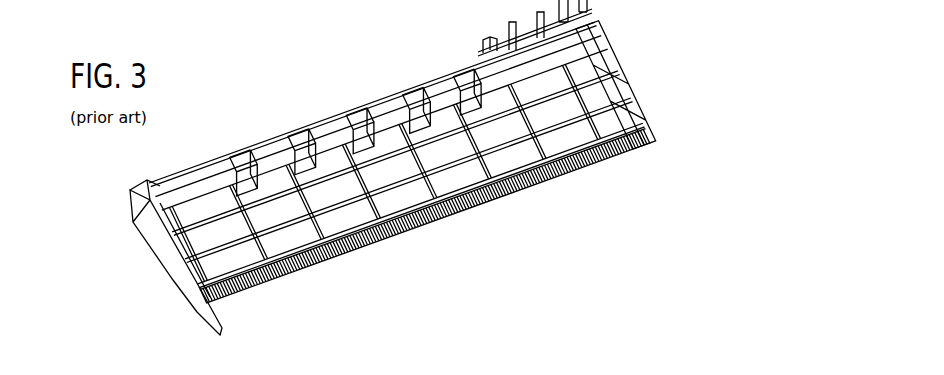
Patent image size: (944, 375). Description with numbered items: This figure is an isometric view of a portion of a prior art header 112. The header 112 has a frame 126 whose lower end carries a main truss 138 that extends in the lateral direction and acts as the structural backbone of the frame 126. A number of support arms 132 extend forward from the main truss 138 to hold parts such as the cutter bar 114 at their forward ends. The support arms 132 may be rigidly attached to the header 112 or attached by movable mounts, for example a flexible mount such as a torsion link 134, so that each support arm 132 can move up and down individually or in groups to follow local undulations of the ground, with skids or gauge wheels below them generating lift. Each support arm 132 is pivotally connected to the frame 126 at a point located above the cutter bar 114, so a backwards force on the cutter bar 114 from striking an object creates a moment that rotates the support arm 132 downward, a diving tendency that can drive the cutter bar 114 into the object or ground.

The header 112 is at (236, 73).
The cutter bar 114 is at (388, 240).
The header frame 126 is at (447, 80).
The support arm 132 is at (528, 150).
The torsion link 134 is at (403, 130).
The main truss 138 is at (318, 160).